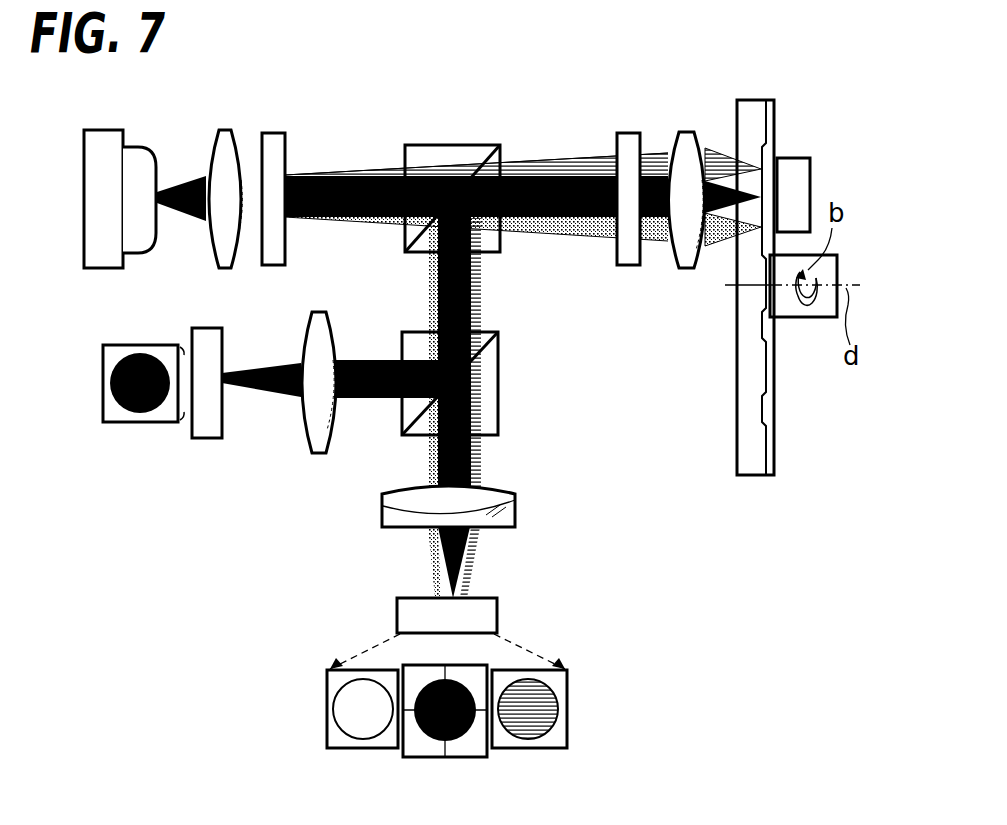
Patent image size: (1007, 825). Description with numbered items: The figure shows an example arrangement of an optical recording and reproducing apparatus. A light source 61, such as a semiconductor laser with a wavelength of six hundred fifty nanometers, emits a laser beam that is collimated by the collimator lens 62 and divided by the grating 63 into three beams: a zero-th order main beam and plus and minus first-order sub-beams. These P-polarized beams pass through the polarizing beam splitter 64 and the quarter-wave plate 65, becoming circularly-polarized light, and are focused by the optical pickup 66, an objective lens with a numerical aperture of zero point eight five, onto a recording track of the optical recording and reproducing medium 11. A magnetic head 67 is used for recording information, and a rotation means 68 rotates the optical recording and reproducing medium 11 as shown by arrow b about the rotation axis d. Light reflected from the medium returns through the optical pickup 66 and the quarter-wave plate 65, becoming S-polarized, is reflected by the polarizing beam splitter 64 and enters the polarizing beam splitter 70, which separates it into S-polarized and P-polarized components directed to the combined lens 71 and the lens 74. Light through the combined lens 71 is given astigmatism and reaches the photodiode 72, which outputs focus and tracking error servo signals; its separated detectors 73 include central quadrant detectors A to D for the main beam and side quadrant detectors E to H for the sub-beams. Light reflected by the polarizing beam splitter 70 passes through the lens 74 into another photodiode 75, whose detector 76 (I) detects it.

The optical recording and reproducing medium 11 is at (758, 100).
The light source 61 is at (84, 192).
The collimator lens 62 is at (227, 130).
The grating 63 is at (279, 133).
The polarizing beam splitter 64 is at (431, 145).
The quarter-wave plate 65 is at (624, 133).
The optical pickup 66 is at (687, 132).
The magnetic head 67 is at (797, 158).
The rotation means 68 is at (840, 270).
The polarizing beam splitter 70 is at (498, 381).
The combined lens 71 is at (515, 498).
The photodiode 72 is at (497, 612).
The separated detectors 73 is at (567, 705).
The lens 74 is at (318, 312).
The photodiode 75 is at (205, 438).
The detector 76 is at (139, 422).